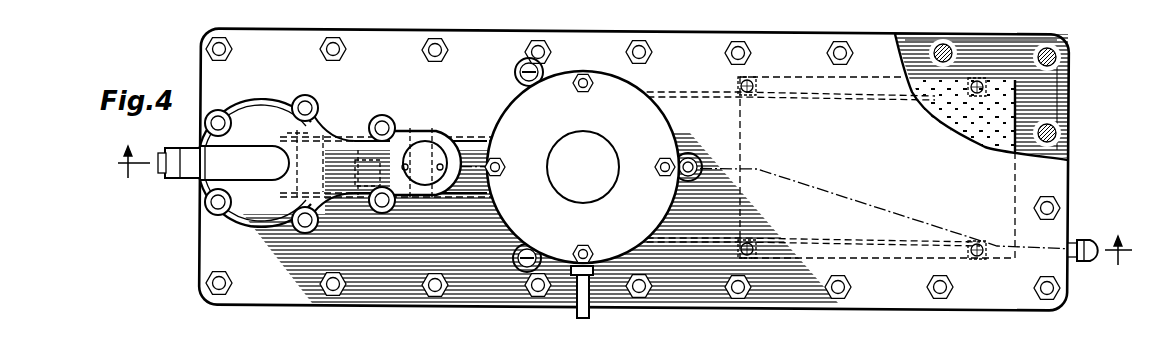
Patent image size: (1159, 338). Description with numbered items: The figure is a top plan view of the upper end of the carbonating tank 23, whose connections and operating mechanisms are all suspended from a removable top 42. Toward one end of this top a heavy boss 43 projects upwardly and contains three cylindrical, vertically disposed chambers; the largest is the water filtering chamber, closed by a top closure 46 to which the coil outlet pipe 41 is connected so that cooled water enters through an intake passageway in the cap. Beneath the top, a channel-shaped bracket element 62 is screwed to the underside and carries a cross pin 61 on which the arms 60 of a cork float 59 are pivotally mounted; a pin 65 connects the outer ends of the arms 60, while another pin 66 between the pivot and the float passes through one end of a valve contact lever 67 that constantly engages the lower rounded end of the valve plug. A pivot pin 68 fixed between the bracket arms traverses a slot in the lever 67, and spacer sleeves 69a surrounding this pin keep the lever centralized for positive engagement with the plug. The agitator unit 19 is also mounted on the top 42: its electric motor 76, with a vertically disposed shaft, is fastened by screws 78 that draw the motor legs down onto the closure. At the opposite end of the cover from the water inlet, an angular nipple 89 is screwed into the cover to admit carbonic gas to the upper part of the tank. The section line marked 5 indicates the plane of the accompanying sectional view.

The section line 5- 5 is at (628, 215).
The agitator unit 19 is at (652, 127).
The carbonating tank 23 is at (394, 293).
The coil outlet pipe 41 is at (180, 182).
The removable top 42 is at (480, 293).
The boss 43 is at (343, 170).
The top closure 46 is at (261, 124).
The cork float 59 is at (970, 118).
The arms 60 is at (566, 95).
The cross pin 61 is at (422, 130).
The channel-shaped bracket element 62 is at (434, 130).
The pin 65 is at (290, 130).
The pin 66 is at (445, 134).
The valve contact lever 67 is at (470, 136).
The pivot pin 68 is at (335, 130).
The spacer sleeves 69a is at (352, 160).
The electric motor 76 is at (595, 167).
The screws 78 is at (519, 75).
The angular nipple 89 is at (1086, 263).